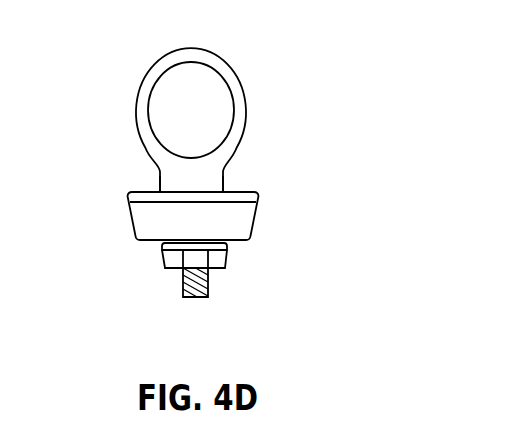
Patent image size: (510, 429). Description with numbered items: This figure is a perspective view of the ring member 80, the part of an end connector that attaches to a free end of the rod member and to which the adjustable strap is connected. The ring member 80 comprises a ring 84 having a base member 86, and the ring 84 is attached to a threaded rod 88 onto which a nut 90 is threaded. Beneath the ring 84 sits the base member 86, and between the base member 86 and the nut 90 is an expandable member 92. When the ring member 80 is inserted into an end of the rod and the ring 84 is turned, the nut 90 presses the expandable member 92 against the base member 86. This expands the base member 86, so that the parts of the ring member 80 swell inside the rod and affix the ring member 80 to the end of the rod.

The ring member 80 is at (253, 118).
The ring 84 is at (135, 122).
The base member 86 is at (242, 192).
The expandable member 92 is at (253, 222).
The nut 90 is at (160, 255).
The threaded rod 88 is at (208, 283).